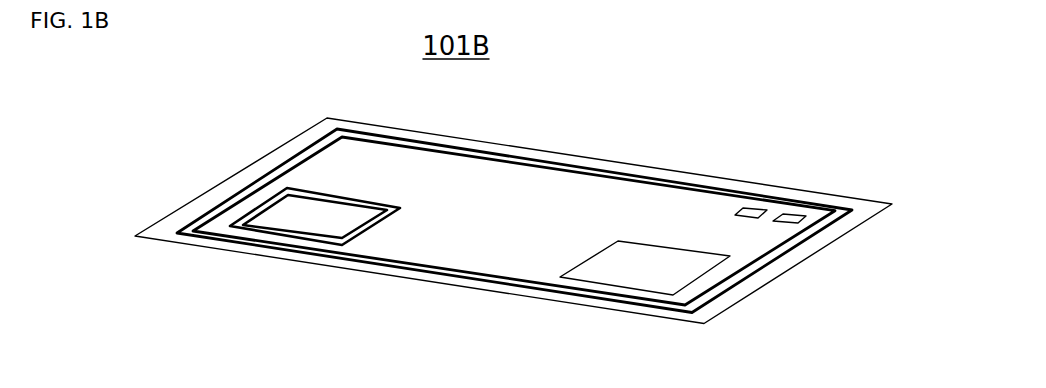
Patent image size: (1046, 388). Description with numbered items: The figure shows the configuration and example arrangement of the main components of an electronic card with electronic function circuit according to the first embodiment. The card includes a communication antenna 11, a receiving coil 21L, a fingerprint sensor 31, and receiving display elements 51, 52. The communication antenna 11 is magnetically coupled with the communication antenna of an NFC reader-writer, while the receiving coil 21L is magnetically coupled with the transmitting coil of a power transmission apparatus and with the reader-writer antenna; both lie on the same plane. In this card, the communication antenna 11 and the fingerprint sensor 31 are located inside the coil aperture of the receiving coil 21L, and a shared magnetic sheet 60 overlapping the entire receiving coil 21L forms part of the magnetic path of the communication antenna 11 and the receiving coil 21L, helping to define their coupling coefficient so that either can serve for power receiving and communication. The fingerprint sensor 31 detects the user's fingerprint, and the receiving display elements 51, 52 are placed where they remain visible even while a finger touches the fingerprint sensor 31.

The magnetic sheet 60 is at (327, 119).
The receiving coil 21L is at (507, 158).
The communication antenna 11 is at (257, 207).
The fingerprint sensor 31 is at (660, 268).
The receiving display element 52 is at (751, 211).
The receiving display element 51 is at (792, 217).